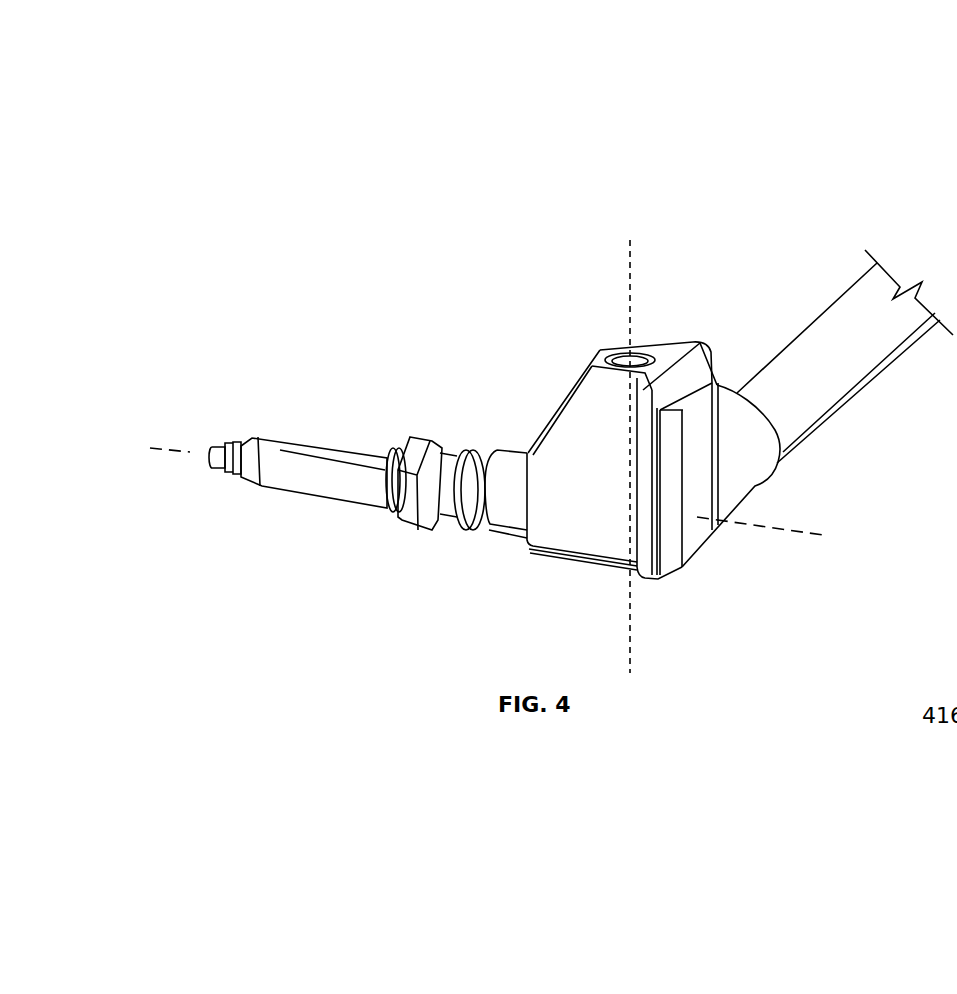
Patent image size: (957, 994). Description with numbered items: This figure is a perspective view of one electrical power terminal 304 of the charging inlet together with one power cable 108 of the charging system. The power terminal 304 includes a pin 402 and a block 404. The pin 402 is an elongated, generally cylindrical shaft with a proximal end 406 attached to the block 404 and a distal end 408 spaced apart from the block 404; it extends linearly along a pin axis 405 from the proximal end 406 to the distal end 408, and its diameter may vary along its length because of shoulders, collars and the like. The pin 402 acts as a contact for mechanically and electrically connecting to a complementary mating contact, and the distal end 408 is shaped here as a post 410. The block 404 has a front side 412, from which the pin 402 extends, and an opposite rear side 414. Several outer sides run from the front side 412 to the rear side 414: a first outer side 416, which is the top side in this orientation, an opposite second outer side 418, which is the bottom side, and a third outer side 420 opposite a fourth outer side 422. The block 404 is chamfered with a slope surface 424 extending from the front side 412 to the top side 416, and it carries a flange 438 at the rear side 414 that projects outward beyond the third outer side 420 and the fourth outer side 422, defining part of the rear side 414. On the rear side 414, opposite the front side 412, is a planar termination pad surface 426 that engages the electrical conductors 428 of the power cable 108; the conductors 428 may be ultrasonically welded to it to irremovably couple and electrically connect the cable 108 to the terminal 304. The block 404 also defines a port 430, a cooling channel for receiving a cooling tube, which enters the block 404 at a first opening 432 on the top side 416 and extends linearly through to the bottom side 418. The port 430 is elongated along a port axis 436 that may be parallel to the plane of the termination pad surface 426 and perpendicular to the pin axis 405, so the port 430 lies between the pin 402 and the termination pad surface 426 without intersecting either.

The power cable 108 is at (818, 333).
The electrical power terminal 304 is at (570, 390).
The pin 402 is at (360, 460).
The block 404 is at (578, 422).
The pin axis 405 is at (190, 449).
The proximal end 406 is at (524, 544).
The distal end 408 is at (211, 476).
The post 410 is at (220, 452).
The front side 412 is at (523, 483).
The rear side 414 is at (713, 380).
The first outer side 416 is at (660, 360).
The second outer side 418 is at (600, 565).
The third outer side 420 is at (573, 498).
The fourth outer side 422 is at (673, 347).
The slope surface 424 is at (545, 430).
The termination pad surface 426 is at (670, 393).
The electrical conductors 428 is at (698, 495).
The port 430 is at (622, 358).
The first opening 432 is at (605, 355).
The port axis 436 is at (630, 278).
The flange 438 is at (695, 365).